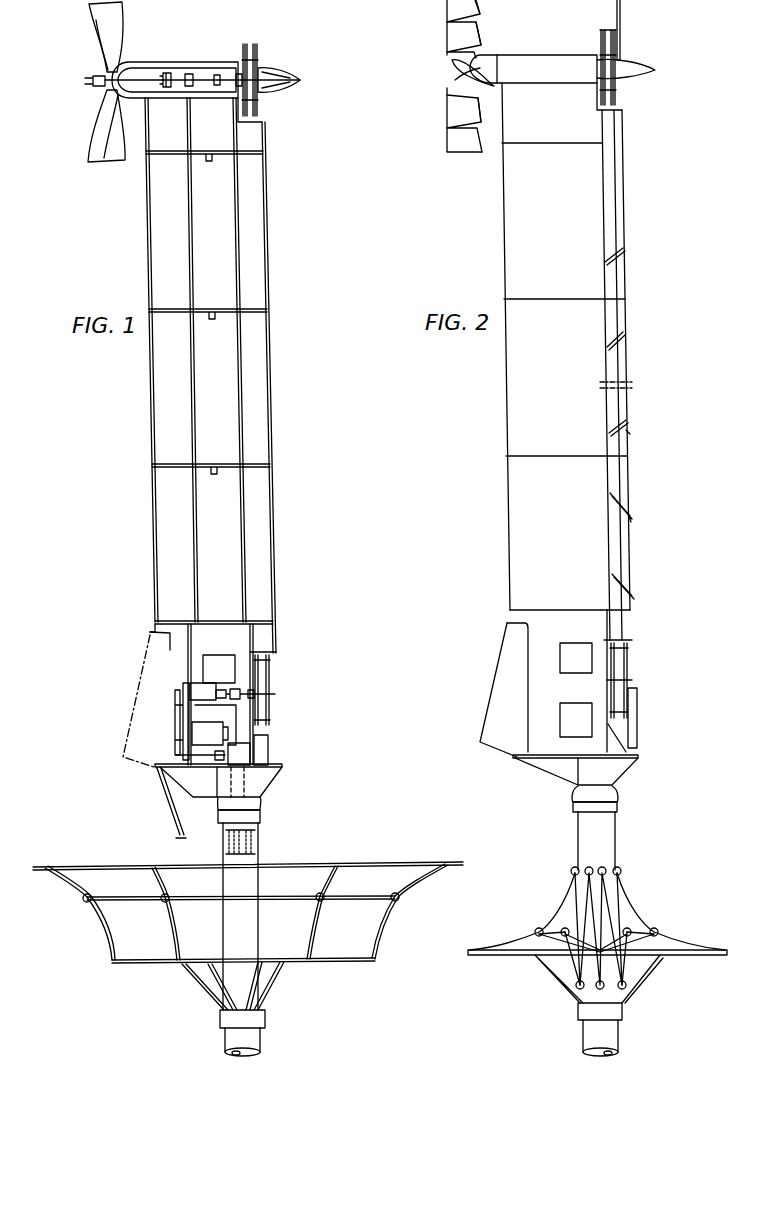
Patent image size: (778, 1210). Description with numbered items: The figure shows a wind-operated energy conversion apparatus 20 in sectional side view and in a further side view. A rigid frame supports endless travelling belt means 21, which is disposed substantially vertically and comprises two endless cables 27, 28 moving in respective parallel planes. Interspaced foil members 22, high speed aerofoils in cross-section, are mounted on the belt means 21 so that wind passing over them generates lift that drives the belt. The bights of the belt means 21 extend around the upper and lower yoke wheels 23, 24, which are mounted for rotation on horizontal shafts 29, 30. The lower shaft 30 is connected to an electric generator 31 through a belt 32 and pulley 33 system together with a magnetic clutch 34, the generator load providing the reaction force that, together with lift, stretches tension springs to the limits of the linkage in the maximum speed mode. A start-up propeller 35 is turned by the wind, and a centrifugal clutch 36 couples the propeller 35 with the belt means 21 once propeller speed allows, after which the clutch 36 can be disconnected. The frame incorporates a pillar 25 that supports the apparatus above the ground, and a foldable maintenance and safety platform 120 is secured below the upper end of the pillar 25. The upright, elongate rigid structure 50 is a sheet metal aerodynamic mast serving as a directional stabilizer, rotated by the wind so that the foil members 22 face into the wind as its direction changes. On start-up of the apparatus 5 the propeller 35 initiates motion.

In FIG. 1, the wind turbine installation 5 is at (280, 821).
In FIG. 1, the energy conversion apparatus 20 is at (286, 203).
In FIG. 2, the energy conversion apparatus 20 is at (640, 274).
In FIG. 2, the endless travelling belt means 21 is at (633, 197).
In FIG. 2, the foil members 22 is at (613, 346).
In FIG. 1, the upper yoke wheel 23 is at (251, 44).
In FIG. 2, the upper yoke wheel 23 is at (601, 42).
In FIG. 1, the lower yoke wheel 24 is at (279, 675).
In FIG. 2, the lower yoke wheel 24 is at (622, 658).
In FIG. 1, the pillar 25 is at (264, 851).
In FIG. 2, the pillar 25 is at (613, 831).
In FIG. 2, the endless cable 27 is at (622, 533).
In FIG. 2, the endless cable 28 is at (613, 490).
In FIG. 1, the horizontal shaft 29 is at (216, 75).
In FIG. 1, the horizontal shaft 30 is at (236, 705).
In FIG. 1, the electric generator 31 is at (196, 731).
In FIG. 1, the belt 32 is at (176, 707).
In FIG. 1, the pulley 33 is at (162, 771).
In FIG. 1, the magnetic clutch 34 is at (199, 688).
In FIG. 1, the start-up propeller 35 is at (96, 150).
In FIG. 2, the start-up propeller 35 is at (452, 148).
In FIG. 1, the centrifugal clutch 36 is at (168, 72).
In FIG. 2, the upright, elongate rigid structure 50 is at (517, 479).
In FIG. 1, the maintenance/safety platform 120 is at (409, 895).
In FIG. 2, the maintenance/safety platform 120 is at (647, 897).